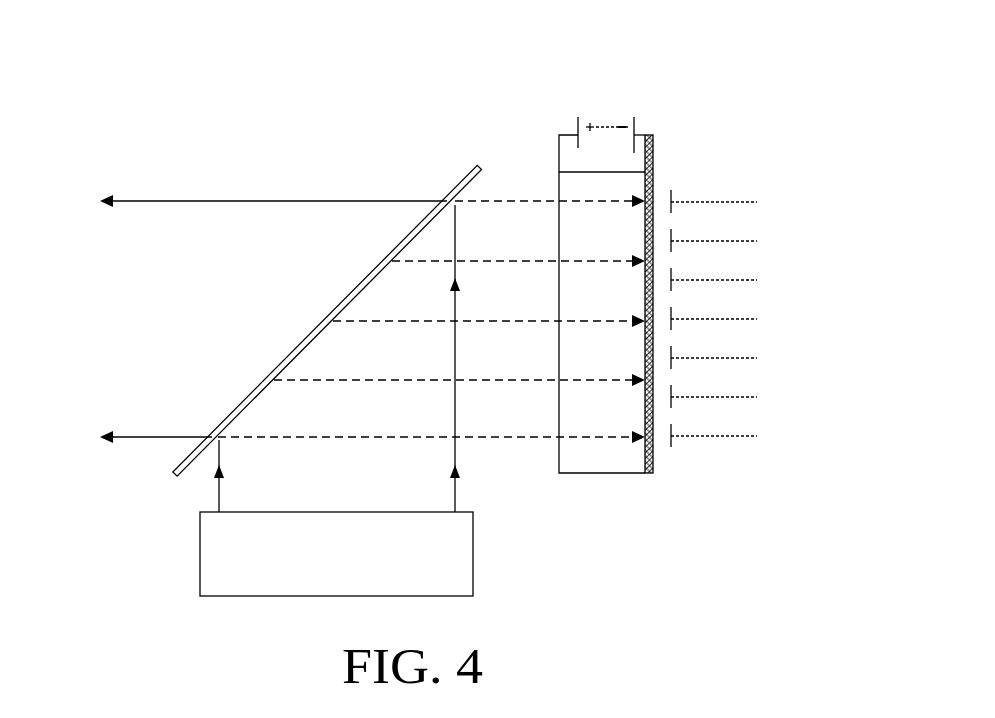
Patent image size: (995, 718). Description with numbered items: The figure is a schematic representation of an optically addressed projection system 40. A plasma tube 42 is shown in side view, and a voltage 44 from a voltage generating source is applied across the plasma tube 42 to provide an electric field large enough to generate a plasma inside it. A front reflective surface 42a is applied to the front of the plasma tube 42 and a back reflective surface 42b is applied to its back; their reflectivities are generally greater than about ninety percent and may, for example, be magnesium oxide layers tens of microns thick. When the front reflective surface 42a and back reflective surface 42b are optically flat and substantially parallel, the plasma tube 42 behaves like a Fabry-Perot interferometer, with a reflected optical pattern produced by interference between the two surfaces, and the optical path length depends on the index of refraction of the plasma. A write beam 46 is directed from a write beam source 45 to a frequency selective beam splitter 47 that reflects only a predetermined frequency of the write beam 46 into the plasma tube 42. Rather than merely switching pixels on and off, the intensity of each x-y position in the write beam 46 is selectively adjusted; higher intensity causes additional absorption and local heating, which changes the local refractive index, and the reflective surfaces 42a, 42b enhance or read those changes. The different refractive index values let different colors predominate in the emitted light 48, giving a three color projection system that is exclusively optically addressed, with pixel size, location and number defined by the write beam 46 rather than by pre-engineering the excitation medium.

The optically addressed projection system 40 is at (67, 332).
The plasma tube 42 is at (487, 336).
The front reflective surface 42a is at (559, 458).
The back reflective surface 42b is at (653, 460).
The voltage 44 is at (599, 122).
The write beam source 45 is at (200, 553).
The write beam 46 is at (456, 500).
The frequency selective beam splitter 47 is at (311, 326).
The emitted light 48 is at (205, 201).